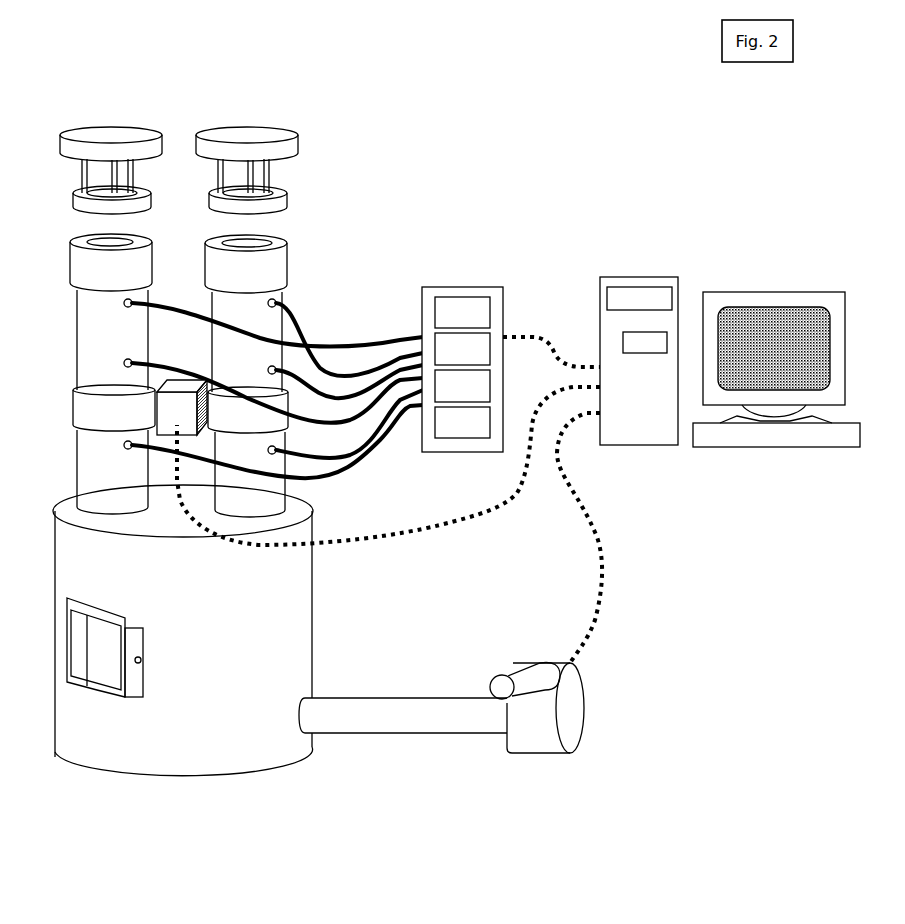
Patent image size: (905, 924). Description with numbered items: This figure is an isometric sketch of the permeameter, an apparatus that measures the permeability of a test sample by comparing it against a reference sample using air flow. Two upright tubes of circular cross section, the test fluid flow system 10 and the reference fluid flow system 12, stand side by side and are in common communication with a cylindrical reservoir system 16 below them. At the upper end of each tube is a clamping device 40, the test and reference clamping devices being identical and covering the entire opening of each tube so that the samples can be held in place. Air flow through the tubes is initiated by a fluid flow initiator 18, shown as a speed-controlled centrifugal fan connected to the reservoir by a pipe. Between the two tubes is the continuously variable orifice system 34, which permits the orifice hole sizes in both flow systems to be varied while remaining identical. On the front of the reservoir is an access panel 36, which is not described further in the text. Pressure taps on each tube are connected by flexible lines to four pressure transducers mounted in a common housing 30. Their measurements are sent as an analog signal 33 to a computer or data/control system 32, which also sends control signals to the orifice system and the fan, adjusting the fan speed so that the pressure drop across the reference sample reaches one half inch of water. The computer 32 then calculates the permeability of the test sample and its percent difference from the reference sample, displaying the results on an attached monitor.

The test fluid flow system 10 is at (138, 265).
The reference fluid flow system 12 is at (257, 272).
The reservoir system 16 is at (215, 703).
The fluid flow initiator 18 is at (575, 713).
The common housing 30 is at (457, 288).
The computer or data/control system 32 is at (652, 280).
The analog signal 33 is at (538, 340).
The continuously variable orifice system 34 is at (170, 412).
The access door 36 is at (103, 665).
The clamping device 40 is at (100, 137).